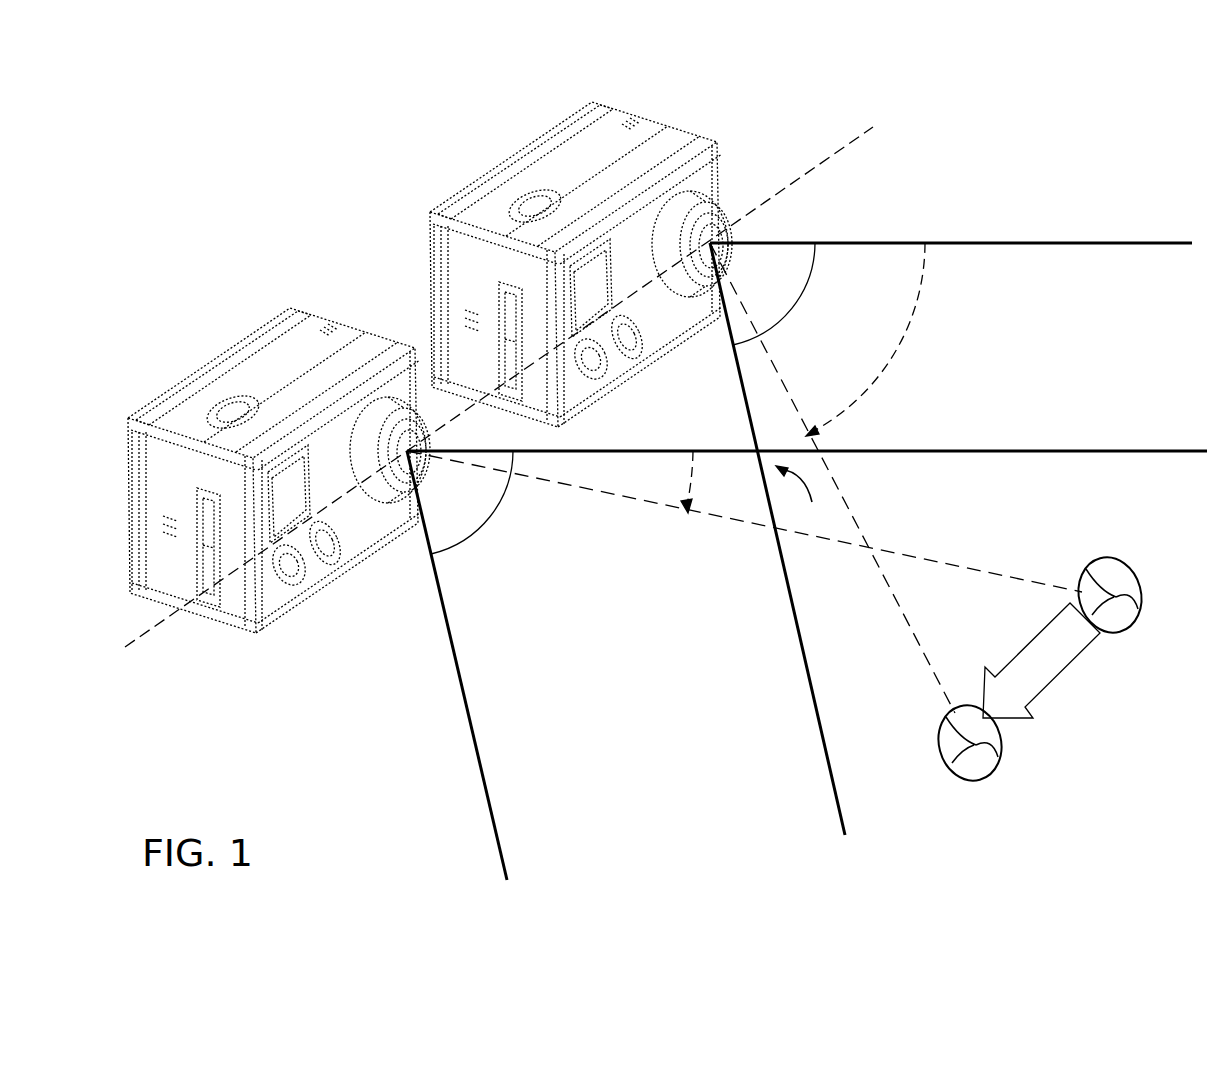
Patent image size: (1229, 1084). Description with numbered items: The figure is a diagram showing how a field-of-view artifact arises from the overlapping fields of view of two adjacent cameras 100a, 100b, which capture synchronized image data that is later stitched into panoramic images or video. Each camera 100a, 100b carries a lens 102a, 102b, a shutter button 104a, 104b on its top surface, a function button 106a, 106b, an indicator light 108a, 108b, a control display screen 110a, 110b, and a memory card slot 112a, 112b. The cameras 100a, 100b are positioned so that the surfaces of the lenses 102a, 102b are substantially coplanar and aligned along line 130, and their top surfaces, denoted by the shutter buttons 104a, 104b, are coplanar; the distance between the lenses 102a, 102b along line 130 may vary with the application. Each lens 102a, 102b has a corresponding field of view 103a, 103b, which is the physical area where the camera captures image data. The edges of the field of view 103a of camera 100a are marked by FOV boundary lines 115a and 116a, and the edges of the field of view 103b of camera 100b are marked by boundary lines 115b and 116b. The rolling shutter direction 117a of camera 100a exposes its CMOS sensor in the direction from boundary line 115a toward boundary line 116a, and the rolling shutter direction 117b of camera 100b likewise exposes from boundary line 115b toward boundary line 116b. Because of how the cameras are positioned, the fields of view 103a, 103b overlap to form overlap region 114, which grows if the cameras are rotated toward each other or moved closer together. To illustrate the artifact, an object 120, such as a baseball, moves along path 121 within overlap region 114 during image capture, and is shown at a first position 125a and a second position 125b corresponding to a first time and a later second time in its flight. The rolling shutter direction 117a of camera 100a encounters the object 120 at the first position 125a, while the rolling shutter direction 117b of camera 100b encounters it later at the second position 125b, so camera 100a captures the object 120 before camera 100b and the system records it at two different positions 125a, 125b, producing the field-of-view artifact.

The camera 100a is at (365, 342).
The camera 100b is at (667, 137).
The lens 102a is at (428, 425).
The lens 102b is at (722, 222).
The field of view 103a is at (486, 518).
The field of view 103b is at (785, 311).
The shutter button 104a is at (232, 404).
The shutter button 104b is at (534, 198).
The function button 106a is at (281, 578).
The function button 106b is at (583, 372).
The indicator light 108a is at (322, 542).
The indicator light 108b is at (624, 336).
The control display screen 110a is at (272, 500).
The control display screen 110b is at (574, 294).
The memory card slot 112a is at (213, 598).
The memory card slot 112b is at (515, 392).
The overlap region 114 is at (807, 494).
The FOV boundary line 115a is at (1092, 450).
The FOV boundary line 115b is at (1092, 243).
The FOV boundary line 116a is at (488, 813).
The FOV boundary line 116b is at (825, 760).
The rolling shutter direction 117a is at (692, 476).
The rolling shutter direction 117b is at (935, 273).
The object 120 is at (1061, 687).
The path 121 is at (1041, 660).
The first position 125a is at (1133, 630).
The second position 125b is at (943, 760).
The line 130 is at (853, 143).